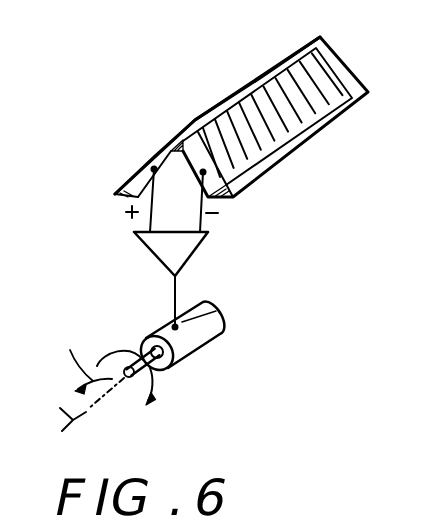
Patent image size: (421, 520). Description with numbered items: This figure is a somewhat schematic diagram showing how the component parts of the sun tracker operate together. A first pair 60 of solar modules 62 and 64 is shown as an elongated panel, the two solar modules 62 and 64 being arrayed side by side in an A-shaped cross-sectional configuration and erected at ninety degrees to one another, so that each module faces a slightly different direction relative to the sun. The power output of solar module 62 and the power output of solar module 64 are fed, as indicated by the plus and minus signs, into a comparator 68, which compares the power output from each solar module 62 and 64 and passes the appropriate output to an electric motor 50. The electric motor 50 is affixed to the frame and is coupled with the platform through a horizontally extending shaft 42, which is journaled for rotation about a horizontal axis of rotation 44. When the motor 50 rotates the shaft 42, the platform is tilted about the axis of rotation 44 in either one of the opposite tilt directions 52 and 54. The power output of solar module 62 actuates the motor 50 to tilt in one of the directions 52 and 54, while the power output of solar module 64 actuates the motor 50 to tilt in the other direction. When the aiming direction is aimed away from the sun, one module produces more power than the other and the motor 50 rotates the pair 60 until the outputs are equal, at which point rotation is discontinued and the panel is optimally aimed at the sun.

The first pair of solar modules 60 is at (236, 119).
The solar module 62 is at (142, 170).
The solar module 64 is at (265, 152).
The comparator 68 is at (151, 248).
The electric motor 50 is at (200, 341).
The shaft 42 is at (112, 379).
The axis of rotation 44 is at (67, 404).
The tilt direction 52 is at (120, 346).
The tilt direction 54 is at (71, 360).